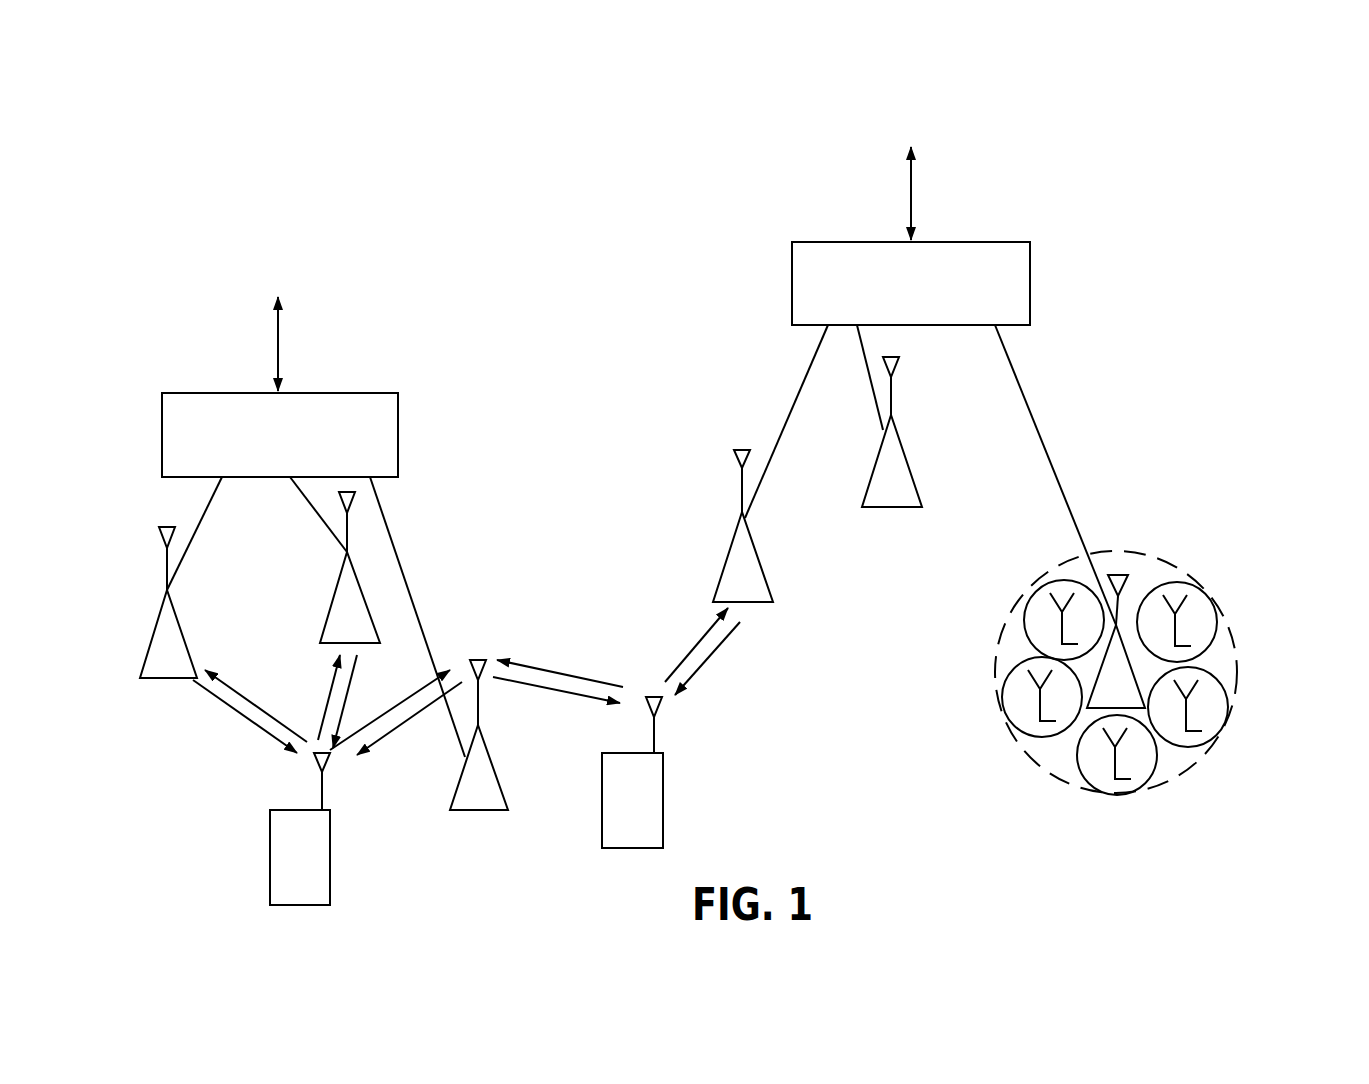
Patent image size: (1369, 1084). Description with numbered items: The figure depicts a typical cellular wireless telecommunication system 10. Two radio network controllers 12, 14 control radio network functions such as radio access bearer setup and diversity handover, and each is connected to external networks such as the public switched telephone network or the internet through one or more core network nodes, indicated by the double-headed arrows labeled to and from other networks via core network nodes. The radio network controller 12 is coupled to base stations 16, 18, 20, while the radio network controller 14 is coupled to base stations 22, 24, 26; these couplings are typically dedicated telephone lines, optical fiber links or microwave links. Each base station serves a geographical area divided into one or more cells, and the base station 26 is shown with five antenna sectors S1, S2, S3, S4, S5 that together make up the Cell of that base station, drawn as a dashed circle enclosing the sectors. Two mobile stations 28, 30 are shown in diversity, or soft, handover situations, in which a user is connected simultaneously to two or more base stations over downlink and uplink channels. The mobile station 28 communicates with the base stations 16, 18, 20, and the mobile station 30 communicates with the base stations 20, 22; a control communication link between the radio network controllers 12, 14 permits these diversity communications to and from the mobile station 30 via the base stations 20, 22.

The cellular wireless telecommunication system 10 is at (135, 337).
The radio network controller 12 is at (386, 460).
The radio network controller 14 is at (1019, 308).
The base station 16 is at (158, 613).
The base station 18 is at (333, 598).
The base station 20 is at (486, 744).
The base station 22 is at (758, 556).
The base station 24 is at (900, 441).
The base station 26 is at (1128, 637).
The mobile station 28 is at (270, 840).
The mobile station 30 is at (602, 783).
The antenna sector S1 is at (1197, 586).
The antenna sector S2 is at (1219, 740).
The antenna sector S3 is at (1160, 772).
The antenna sector S4 is at (1001, 697).
The antenna sector S5 is at (1014, 612).
The cell Cell is at (1223, 622).